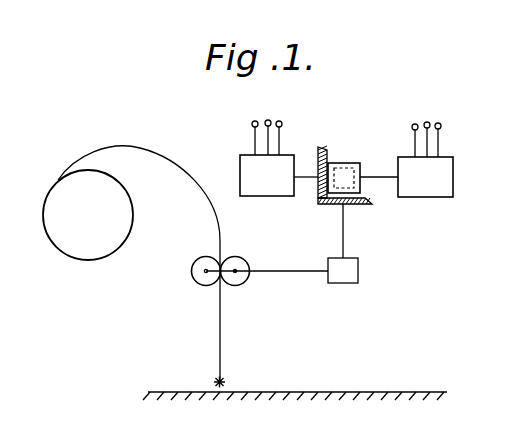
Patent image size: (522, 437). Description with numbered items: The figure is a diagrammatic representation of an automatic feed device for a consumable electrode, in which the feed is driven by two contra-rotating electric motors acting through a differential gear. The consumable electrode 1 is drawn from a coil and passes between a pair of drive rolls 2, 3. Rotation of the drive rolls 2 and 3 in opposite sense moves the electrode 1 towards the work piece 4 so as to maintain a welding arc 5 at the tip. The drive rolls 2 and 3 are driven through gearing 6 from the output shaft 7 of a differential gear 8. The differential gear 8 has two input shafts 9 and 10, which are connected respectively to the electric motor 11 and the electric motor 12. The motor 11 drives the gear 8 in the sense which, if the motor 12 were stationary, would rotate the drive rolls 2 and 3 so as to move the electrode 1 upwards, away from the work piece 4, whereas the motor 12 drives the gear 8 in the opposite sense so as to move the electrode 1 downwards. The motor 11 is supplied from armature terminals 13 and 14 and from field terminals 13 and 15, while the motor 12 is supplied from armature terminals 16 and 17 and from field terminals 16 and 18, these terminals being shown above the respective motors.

The consumable electrode 1 is at (141, 147).
The drive roll 2 is at (191, 272).
The drive roll 3 is at (243, 258).
The work piece 4 is at (325, 392).
The welding arc 5 is at (224, 378).
The gearing 6 is at (359, 269).
The output shaft 7 is at (344, 237).
The differential gear 8 is at (340, 166).
The input shaft 9 is at (306, 178).
The input shaft 10 is at (387, 178).
The electric motor 11 is at (275, 191).
The electric motor 12 is at (433, 191).
The armature terminal 13 is at (252, 123).
The armature terminal 14 is at (268, 120).
The field terminal 15 is at (282, 124).
The armature terminal 16 is at (412, 127).
The armature terminal 17 is at (427, 122).
The field terminal 18 is at (441, 126).